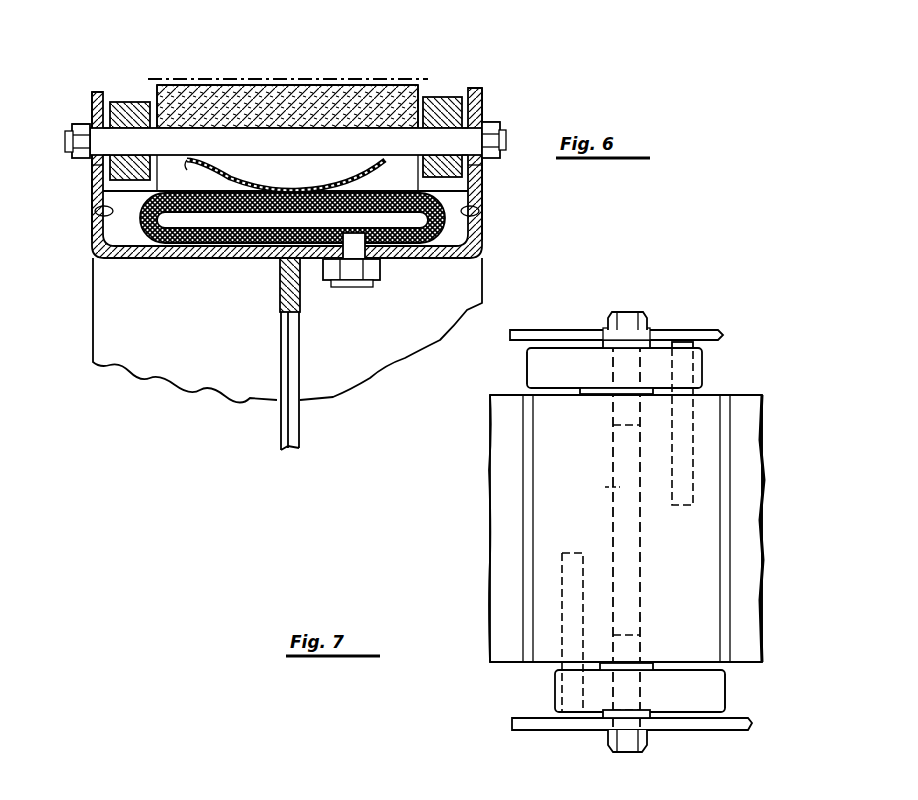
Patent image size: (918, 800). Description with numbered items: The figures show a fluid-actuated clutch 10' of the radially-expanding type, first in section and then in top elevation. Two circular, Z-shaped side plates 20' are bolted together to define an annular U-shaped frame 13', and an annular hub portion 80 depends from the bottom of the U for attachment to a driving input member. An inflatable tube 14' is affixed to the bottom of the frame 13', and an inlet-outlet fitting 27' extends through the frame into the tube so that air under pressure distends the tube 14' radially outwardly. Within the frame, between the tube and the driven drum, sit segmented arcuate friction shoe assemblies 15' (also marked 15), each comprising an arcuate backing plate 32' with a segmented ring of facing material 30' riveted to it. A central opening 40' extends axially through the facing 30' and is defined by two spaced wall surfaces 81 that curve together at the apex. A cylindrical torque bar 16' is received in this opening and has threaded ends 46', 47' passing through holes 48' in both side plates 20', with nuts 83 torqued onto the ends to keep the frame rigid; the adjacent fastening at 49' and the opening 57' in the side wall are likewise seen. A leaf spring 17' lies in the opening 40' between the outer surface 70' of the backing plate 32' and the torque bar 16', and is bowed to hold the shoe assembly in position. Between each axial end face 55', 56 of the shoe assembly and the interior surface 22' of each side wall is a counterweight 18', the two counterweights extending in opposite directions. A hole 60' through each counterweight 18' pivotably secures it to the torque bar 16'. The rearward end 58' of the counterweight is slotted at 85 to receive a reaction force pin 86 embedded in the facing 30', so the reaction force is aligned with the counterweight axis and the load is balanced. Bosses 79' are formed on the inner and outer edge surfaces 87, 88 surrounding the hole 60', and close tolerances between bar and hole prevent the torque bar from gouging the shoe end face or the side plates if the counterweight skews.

In FIG. 6, the expanding clutch 10' is at (258, 42).
In FIG. 7, the expanding clutch 10' is at (679, 343).
In FIG. 6, the annular U-shaped frame 13' is at (241, 324).
In FIG. 6, the inflatable tube 14' is at (281, 244).
In FIG. 6, the friction shoe assembly 15' is at (287, 69).
In FIG. 7, the friction shoe assembly 15' is at (804, 528).
In FIG. 6, the friction shoe assembly 15 is at (472, 192).
In FIG. 6, the torque bar 16' is at (286, 141).
In FIG. 7, the torque bar 16' is at (652, 541).
In FIG. 6, the leaf spring 17' is at (286, 174).
In FIG. 7, the leaf spring 17' is at (596, 486).
In FIG. 6, the counterweight 18' is at (288, 109).
In FIG. 7, the counterweight 18' is at (630, 530).
In FIG. 6, the side plate 20' is at (292, 141).
In FIG. 7, the side plate 20' is at (650, 524).
In FIG. 6, the interior surface of sidewall 22' is at (288, 173).
In FIG. 6, the inlet-outlet fitting 27' is at (351, 277).
In FIG. 6, the facing material 30' is at (287, 62).
In FIG. 7, the facing material 30' is at (624, 528).
In FIG. 6, the backing plate 32' is at (285, 179).
In FIG. 6, the central opening 40' is at (182, 153).
In FIG. 6, the threaded end 46' is at (57, 149).
In FIG. 6, the threaded end 47' is at (515, 140).
In FIG. 6, the hole 48' is at (73, 182).
In FIG. 6, the washer 49' is at (506, 169).
In FIG. 6, the axial end face 55' is at (434, 83).
In FIG. 6, the axial end face 56 is at (152, 95).
In FIG. 6, the opening 57' is at (289, 213).
In FIG. 7, the rearward end 58' is at (635, 516).
In FIG. 6, the hole 60' is at (285, 141).
In FIG. 7, the hole 60' is at (641, 539).
In FIG. 6, the outer surface of backing plate 70' is at (292, 180).
In FIG. 7, the boss 79' is at (612, 474).
In FIG. 6, the annular hub portion 80 is at (280, 304).
In FIG. 7, the wall surface 81 is at (645, 636).
In FIG. 6, the nut 83 is at (80, 126).
In FIG. 7, the nut 83 is at (642, 320).
In FIG. 7, the slot 85 is at (578, 742).
In FIG. 7, the reaction force pin 86 is at (565, 553).
In FIG. 7, the inner edge surface 87 is at (595, 392).
In FIG. 7, the outer edge surface 88 is at (600, 348).